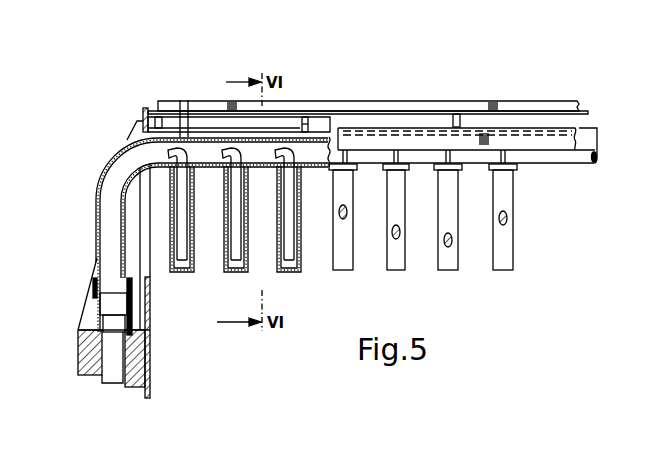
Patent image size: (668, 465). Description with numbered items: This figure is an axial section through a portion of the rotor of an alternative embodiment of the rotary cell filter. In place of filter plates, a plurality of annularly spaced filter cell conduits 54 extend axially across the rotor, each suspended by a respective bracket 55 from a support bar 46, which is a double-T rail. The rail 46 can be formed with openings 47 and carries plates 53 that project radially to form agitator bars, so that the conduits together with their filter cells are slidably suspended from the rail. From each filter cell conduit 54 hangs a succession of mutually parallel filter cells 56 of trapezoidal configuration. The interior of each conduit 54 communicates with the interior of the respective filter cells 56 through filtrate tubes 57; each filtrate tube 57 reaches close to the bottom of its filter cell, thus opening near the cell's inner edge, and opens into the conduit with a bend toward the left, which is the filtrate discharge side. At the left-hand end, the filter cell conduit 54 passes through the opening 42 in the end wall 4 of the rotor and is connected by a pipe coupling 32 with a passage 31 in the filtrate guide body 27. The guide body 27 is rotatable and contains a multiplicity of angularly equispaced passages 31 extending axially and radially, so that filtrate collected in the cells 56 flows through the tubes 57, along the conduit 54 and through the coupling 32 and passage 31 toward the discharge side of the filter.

The end wall 4 is at (151, 362).
The filtrate guide body 27 is at (88, 372).
The passage 31 is at (126, 368).
The pipe coupling 32 is at (96, 303).
The opening 42 is at (140, 232).
The support bar 46 is at (186, 133).
The opening 47 is at (328, 124).
The plate 53 is at (412, 107).
The filter cell conduit 54 is at (102, 167).
The bracket 55 is at (548, 142).
The filter cell 56 is at (224, 269).
The filtrate tube 57 is at (183, 205).